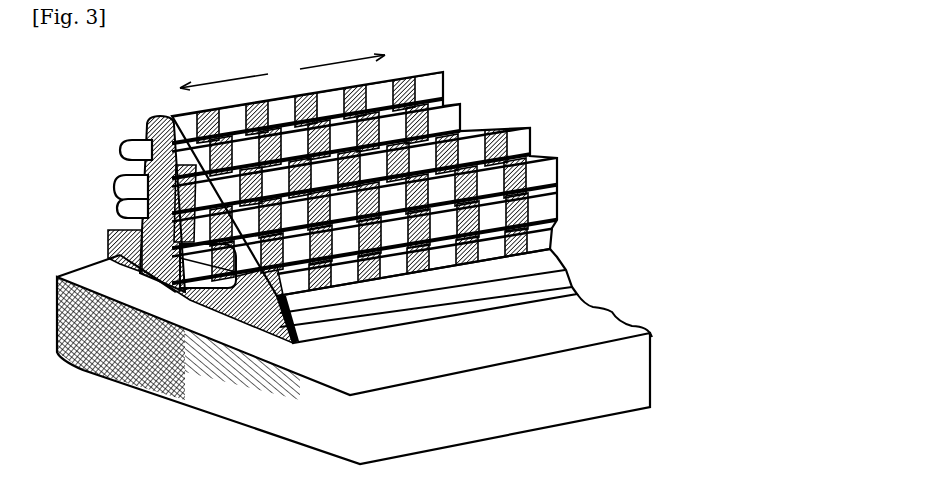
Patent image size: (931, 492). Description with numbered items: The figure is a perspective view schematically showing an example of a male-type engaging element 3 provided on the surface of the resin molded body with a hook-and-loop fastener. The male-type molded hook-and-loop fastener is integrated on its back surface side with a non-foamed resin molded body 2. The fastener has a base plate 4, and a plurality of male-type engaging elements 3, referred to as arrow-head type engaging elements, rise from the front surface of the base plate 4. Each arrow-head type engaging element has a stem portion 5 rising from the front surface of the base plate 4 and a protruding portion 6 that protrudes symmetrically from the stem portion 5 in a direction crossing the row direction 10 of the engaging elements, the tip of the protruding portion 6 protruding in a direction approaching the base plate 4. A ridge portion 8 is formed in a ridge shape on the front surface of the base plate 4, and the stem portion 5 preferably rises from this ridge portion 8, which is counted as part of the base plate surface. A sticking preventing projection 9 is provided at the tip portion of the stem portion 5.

The non-foamed resin molded body 2 is at (548, 393).
The male-type engaging element 3 is at (118, 169).
The base plate 4 is at (572, 287).
The stem portion 5 is at (137, 208).
The protruding portion 6 is at (542, 180).
The ridge portion 8 is at (165, 288).
The sticking preventing projection 9 is at (147, 118).
The row direction 10 is at (282, 72).